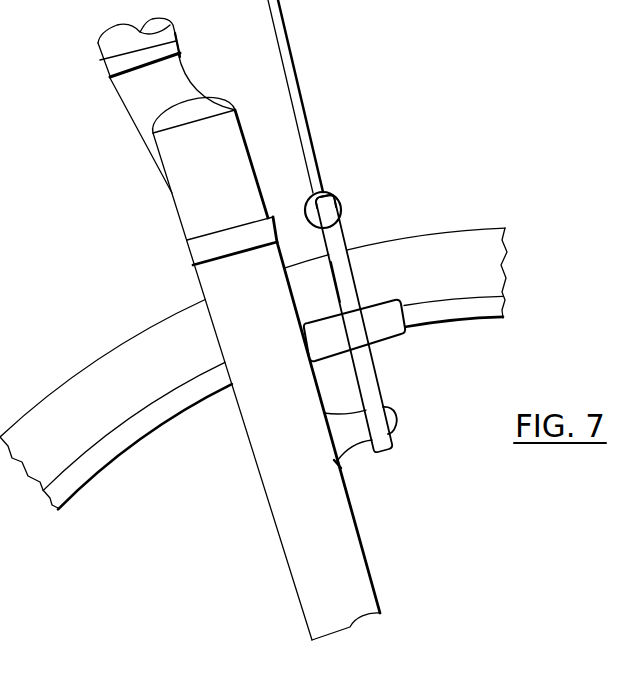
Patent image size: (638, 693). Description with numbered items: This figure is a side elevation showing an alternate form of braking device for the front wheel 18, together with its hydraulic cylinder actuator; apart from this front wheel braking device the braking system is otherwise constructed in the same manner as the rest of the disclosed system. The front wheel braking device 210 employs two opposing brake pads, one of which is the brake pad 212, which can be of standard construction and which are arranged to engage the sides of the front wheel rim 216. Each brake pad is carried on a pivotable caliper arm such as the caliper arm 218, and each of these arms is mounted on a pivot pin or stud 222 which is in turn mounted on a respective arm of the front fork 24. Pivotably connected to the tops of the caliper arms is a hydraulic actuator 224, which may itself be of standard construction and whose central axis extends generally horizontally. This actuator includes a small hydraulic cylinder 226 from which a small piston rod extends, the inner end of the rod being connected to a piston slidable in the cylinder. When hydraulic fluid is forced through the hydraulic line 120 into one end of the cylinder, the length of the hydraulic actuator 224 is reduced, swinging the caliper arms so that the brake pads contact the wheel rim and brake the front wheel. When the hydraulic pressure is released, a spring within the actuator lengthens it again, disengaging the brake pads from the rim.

The front wheel 18 is at (498, 262).
The front fork 24 is at (258, 462).
The hydraulic line 120 is at (300, 85).
The front wheel braking device 210 is at (345, 240).
The brake pad 212 is at (386, 332).
The front wheel rim 216 is at (500, 310).
The caliper arm 218 is at (355, 288).
The pivot pin or stud 222 is at (398, 419).
The hydraulic actuator 224 is at (340, 197).
The hydraulic cylinder 226 is at (331, 193).